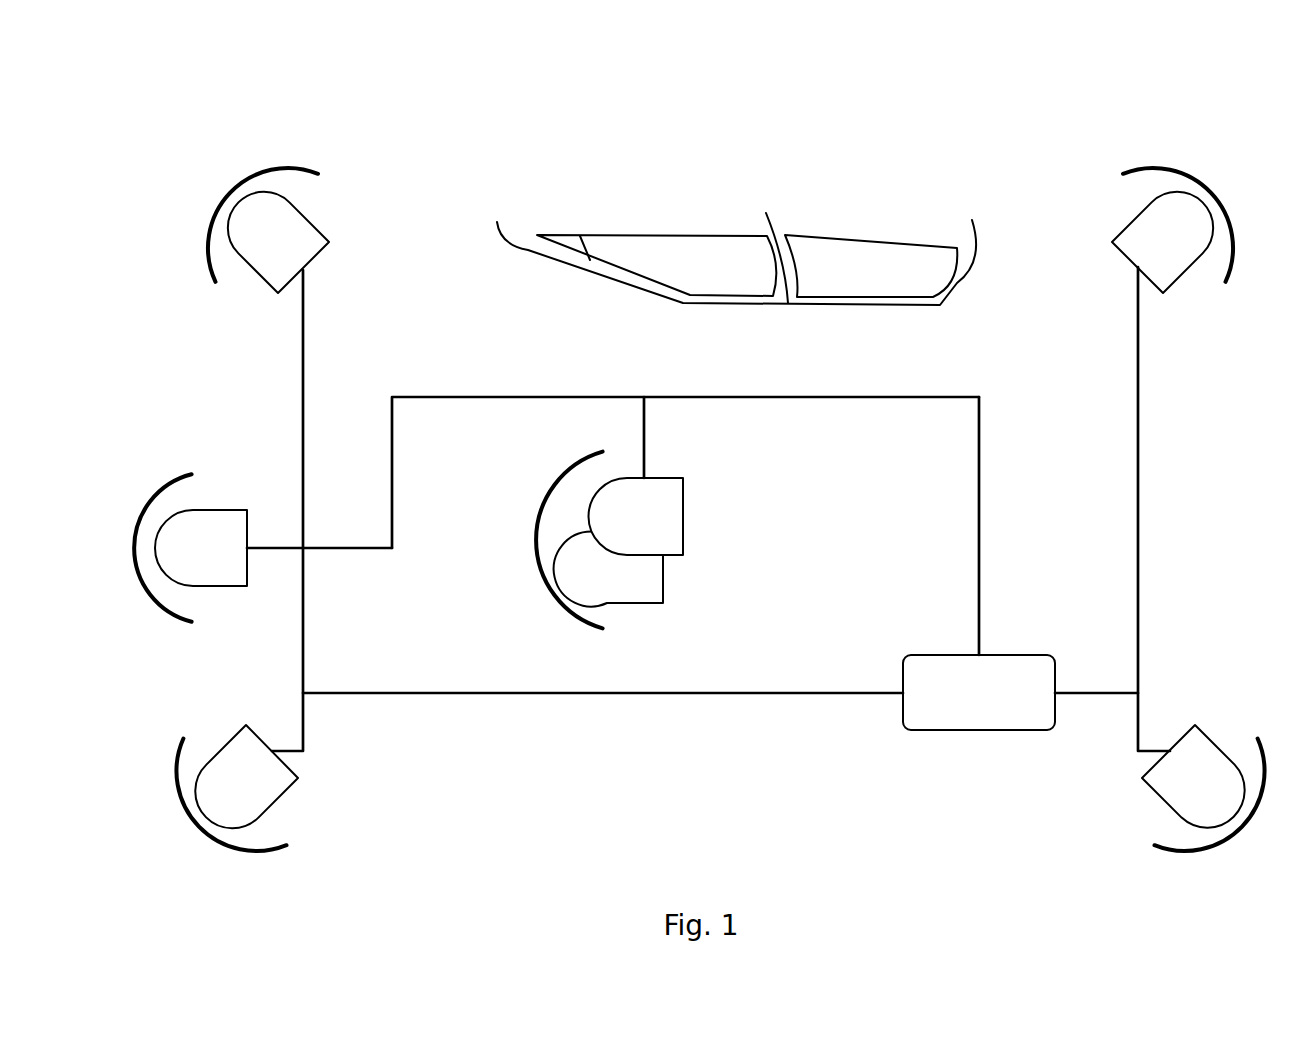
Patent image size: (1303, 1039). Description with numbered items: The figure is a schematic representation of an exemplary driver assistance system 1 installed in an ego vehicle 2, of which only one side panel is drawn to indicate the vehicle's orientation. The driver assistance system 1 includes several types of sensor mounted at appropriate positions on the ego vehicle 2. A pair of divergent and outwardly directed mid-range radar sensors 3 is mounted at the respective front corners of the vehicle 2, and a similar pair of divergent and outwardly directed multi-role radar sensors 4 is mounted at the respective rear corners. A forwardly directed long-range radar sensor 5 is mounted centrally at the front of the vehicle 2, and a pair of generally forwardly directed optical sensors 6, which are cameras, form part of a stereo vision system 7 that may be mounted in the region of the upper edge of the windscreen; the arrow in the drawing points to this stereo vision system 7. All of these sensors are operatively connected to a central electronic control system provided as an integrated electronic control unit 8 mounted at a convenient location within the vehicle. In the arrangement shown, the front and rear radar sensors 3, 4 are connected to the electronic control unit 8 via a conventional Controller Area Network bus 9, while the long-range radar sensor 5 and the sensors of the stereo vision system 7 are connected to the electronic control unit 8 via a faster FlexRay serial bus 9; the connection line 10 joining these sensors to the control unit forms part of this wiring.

The driver assistance system 1 is at (445, 288).
The ego vehicle 2 is at (820, 237).
The mid-range radar sensors 3 is at (255, 208).
The multi-role radar sensors 4 is at (1176, 200).
The long-range radar sensor 5 is at (222, 510).
The optical sensors 6 is at (683, 518).
The stereo vision system 7 is at (532, 543).
The electronic control unit 8 is at (963, 732).
The bus 9 is at (1138, 498).
The connection line 10 is at (525, 397).